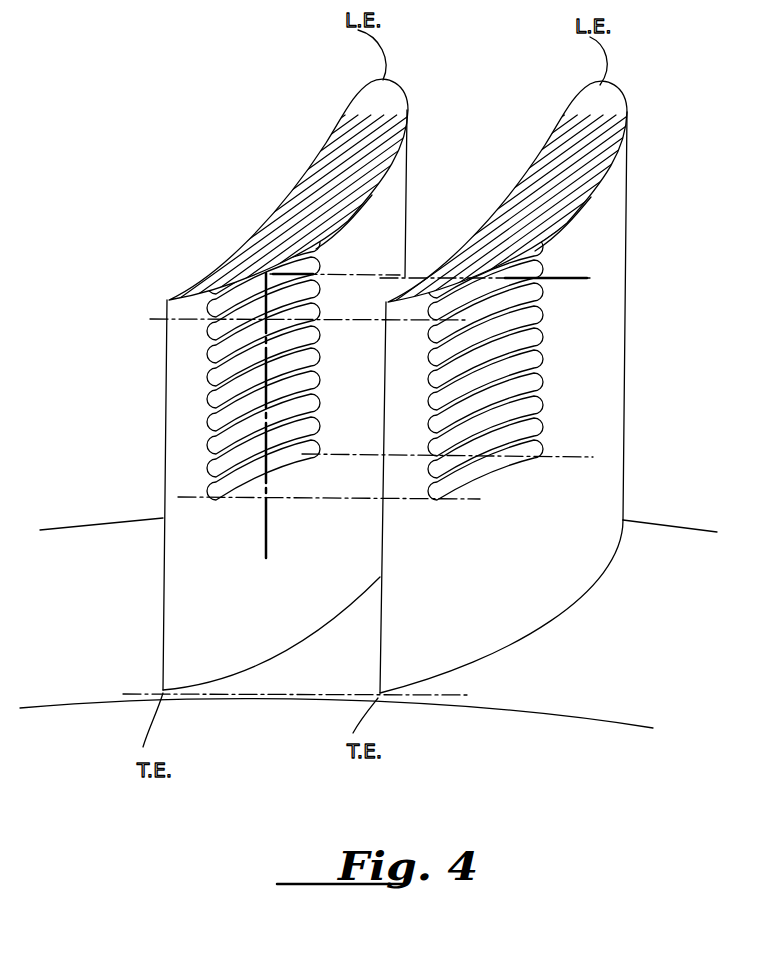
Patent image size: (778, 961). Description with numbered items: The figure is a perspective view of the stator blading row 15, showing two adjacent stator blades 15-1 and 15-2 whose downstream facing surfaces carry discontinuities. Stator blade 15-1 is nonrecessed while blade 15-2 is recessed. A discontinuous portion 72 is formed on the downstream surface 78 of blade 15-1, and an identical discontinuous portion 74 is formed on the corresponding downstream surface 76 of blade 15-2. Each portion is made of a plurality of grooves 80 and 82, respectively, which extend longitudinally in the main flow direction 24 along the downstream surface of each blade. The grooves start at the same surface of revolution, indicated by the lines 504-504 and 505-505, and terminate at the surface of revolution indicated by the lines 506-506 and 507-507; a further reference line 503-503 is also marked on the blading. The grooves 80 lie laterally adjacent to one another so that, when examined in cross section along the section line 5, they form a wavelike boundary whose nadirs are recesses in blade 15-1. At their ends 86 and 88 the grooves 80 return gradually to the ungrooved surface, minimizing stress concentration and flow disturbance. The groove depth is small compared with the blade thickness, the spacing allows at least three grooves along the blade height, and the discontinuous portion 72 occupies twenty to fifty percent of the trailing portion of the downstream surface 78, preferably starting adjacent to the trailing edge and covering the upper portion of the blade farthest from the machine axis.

The section line V-V 5 is at (283, 292).
The stator blading row 15 is at (656, 516).
The stator blade 15-1 is at (333, 125).
The stator blade 15-2 is at (563, 118).
The main flow direction 24 is at (708, 600).
The discontinuous portion 72 is at (326, 345).
The discontinuous portion 74 is at (549, 333).
The convex surface of second blade 76 is at (566, 228).
The downstream surface 78 is at (336, 230).
The grooves 80 is at (228, 390).
The grooves 82 is at (463, 404).
The groove end 86 is at (218, 442).
The groove end 88 is at (323, 417).
The root reference plane 503 is at (295, 692).
The line indicating surface of revolution 504 is at (430, 262).
The line indicating surface of revolution 505 is at (292, 329).
The line indicating surface of revolution 506 is at (447, 470).
The line indicating surface of revolution 507 is at (335, 512).